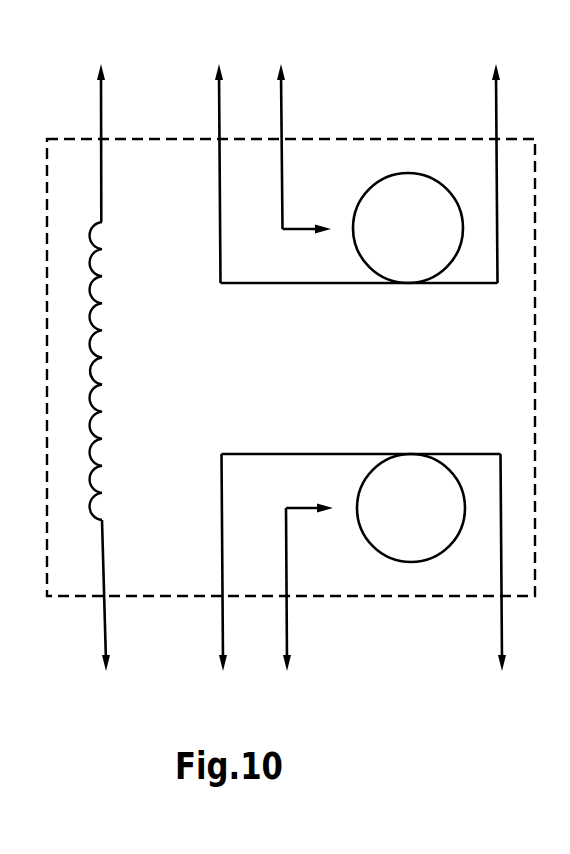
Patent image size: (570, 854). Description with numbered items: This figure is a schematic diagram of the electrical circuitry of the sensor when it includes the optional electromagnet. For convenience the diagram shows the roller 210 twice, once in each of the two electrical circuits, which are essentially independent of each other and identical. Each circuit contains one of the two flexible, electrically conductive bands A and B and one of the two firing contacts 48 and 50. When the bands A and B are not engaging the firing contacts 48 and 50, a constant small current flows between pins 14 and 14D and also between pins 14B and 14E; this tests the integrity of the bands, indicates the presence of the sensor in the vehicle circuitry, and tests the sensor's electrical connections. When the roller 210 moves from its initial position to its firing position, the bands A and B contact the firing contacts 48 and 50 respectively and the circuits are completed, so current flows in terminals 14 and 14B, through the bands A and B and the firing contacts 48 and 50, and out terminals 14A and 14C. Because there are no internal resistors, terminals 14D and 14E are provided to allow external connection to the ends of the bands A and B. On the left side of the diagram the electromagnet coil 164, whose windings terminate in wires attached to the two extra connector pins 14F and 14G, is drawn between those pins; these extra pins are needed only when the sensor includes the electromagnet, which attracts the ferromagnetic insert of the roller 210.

The connector pin 14 is at (496, 160).
The connector pin 14A is at (286, 133).
The connector pin 14B is at (505, 580).
The connector pin 14C is at (290, 607).
The connector pin 14D is at (224, 160).
The connector pin 14E is at (226, 580).
The connector pin 14F is at (104, 129).
The connector pin 14G is at (109, 613).
The firing contact 48 is at (320, 229).
The firing contact 50 is at (330, 508).
The electromagnet coil 164 is at (97, 357).
The roller 210 is at (418, 508).
The band A is at (466, 285).
The band B is at (473, 452).